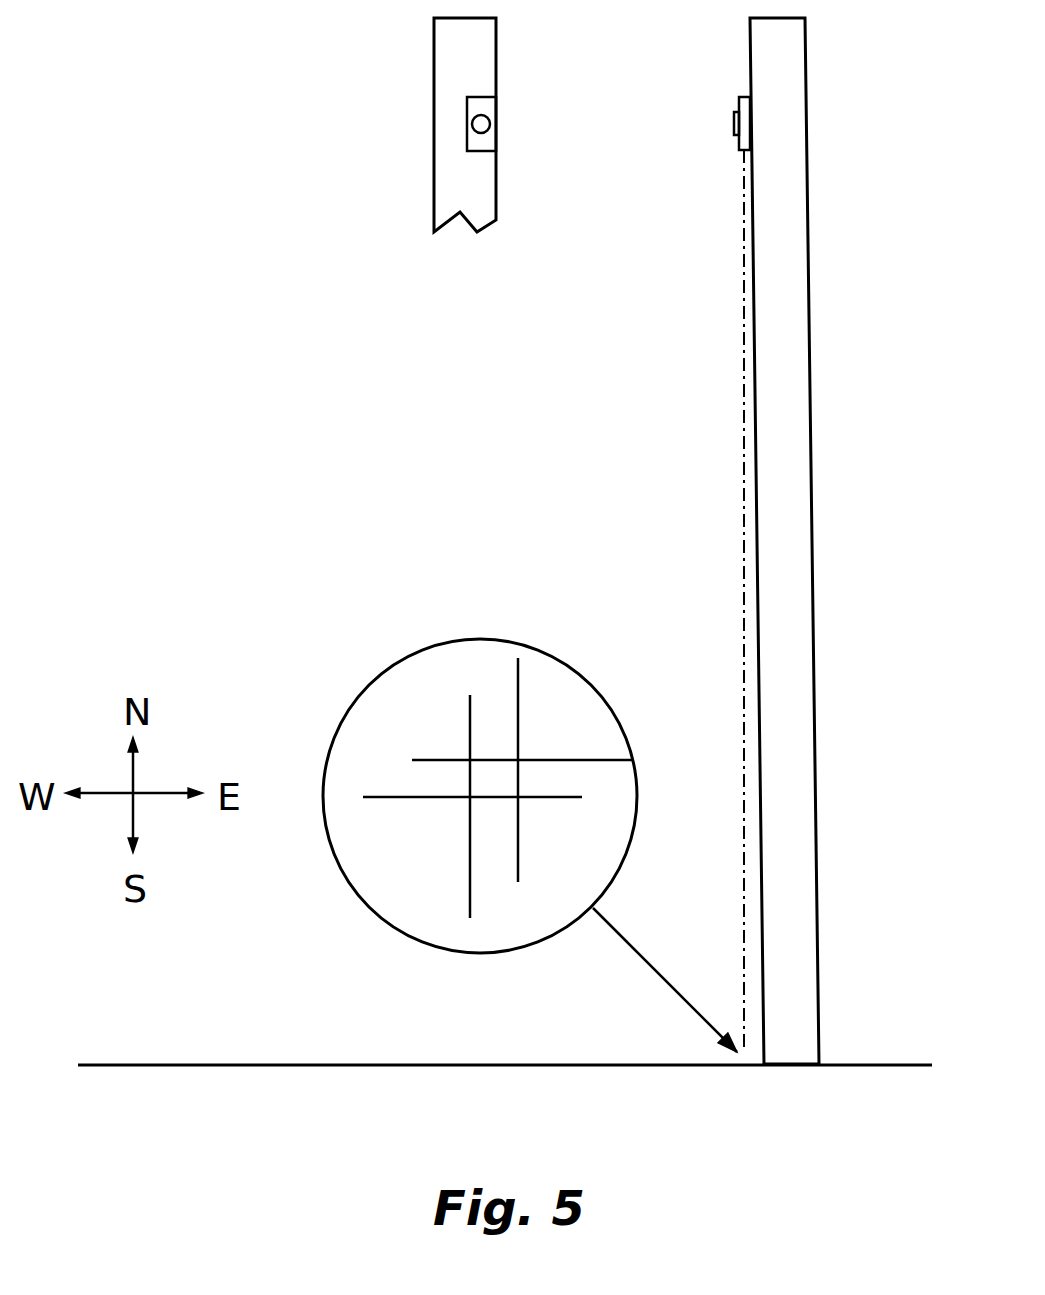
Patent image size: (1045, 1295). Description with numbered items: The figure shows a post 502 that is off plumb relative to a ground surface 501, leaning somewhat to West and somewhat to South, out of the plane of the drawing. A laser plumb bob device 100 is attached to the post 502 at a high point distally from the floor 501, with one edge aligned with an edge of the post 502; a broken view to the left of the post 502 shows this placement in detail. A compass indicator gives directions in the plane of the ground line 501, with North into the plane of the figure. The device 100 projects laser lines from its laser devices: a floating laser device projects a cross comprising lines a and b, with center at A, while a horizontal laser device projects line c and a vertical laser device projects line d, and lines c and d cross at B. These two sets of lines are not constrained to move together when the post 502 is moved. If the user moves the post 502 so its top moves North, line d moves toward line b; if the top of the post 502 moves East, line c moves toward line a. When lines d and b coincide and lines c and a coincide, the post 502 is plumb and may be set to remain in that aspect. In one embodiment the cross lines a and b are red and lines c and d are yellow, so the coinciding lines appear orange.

The laser plumb bob device 100 is at (490, 110).
The ground surface 501 is at (230, 1063).
The post 502 is at (432, 60).
The center of cross A is at (467, 792).
The crossing point of lines c and d B is at (524, 757).
The line a is at (469, 703).
The line b is at (404, 797).
The line c is at (518, 687).
The line d is at (582, 765).